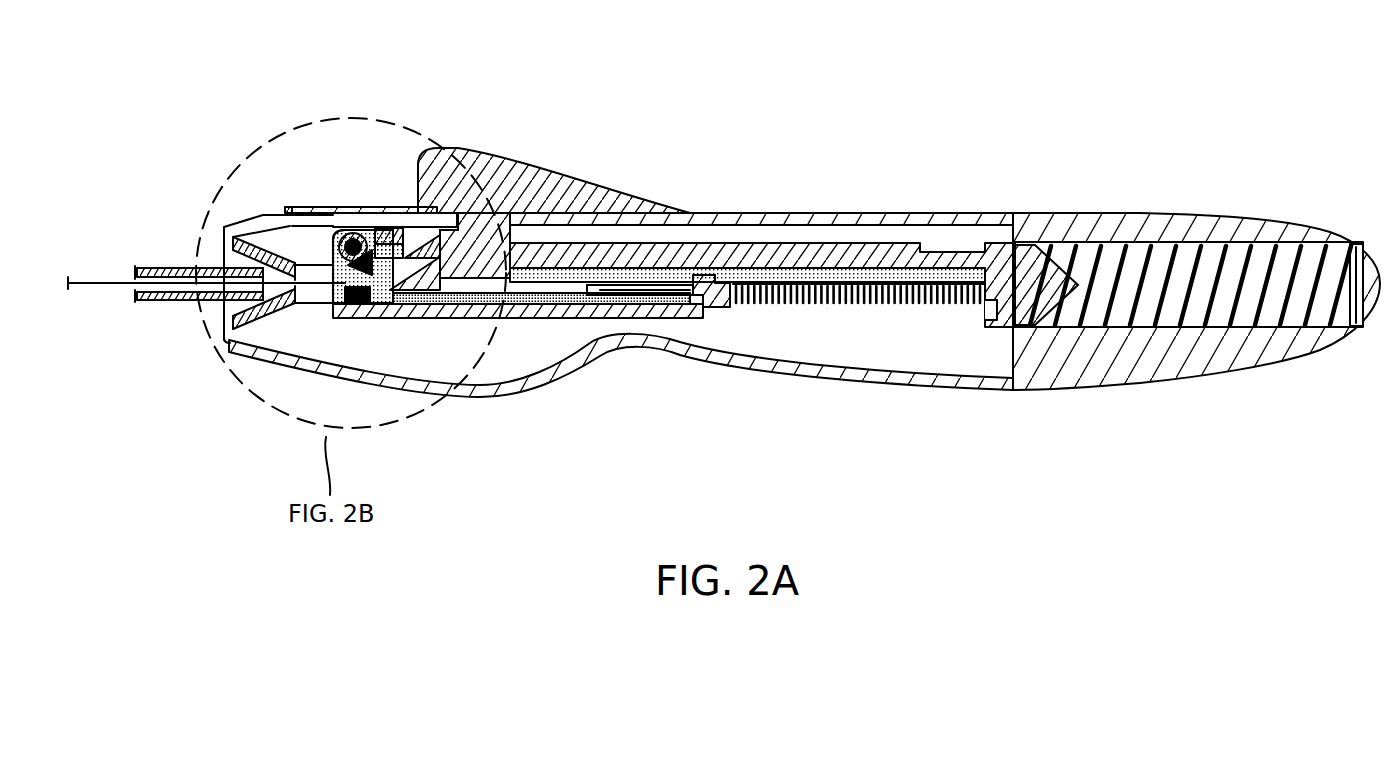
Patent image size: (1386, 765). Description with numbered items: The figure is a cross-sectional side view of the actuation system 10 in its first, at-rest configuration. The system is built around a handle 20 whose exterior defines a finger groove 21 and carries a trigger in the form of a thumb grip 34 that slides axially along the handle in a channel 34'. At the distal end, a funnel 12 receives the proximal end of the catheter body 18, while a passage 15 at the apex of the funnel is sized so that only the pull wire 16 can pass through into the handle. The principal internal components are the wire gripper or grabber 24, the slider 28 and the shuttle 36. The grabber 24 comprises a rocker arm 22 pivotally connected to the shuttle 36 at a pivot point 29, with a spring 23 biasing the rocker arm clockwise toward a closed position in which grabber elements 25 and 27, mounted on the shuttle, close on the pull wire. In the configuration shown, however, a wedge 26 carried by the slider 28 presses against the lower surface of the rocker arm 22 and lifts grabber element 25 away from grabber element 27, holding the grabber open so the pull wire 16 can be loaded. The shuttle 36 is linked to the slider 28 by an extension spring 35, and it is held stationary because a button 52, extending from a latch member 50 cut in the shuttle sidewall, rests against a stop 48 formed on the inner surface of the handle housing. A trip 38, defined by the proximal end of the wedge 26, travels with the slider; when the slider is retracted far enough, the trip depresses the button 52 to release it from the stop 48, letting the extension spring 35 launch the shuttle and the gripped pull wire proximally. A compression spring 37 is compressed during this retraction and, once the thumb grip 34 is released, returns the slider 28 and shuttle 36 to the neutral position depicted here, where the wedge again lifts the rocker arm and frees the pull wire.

The actuation system 10 is at (858, 77).
The funnel 12 is at (224, 268).
The passage 15 is at (292, 275).
The pull wire 16 is at (268, 335).
The catheter body 18 is at (165, 300).
The handle 20 is at (1042, 392).
The finger groove 21 is at (640, 348).
The rocker arm 22 is at (420, 225).
The spring 23 is at (388, 225).
The wire gripper or grabber 24 is at (348, 225).
The grabber element 25 is at (395, 298).
The wedge 26 is at (415, 296).
The grabber element 27 is at (352, 320).
The slider 28 is at (484, 258).
The pivot point 29 is at (330, 222).
The thumb grip 34 is at (487, 143).
The channel 34' is at (761, 154).
The extension spring 35 is at (797, 300).
The shuttle 36 is at (680, 305).
The compression spring 37 is at (1137, 245).
The trip 38 is at (471, 298).
The stop 48 is at (646, 297).
The latch member 50 is at (630, 300).
The button 52 is at (596, 293).